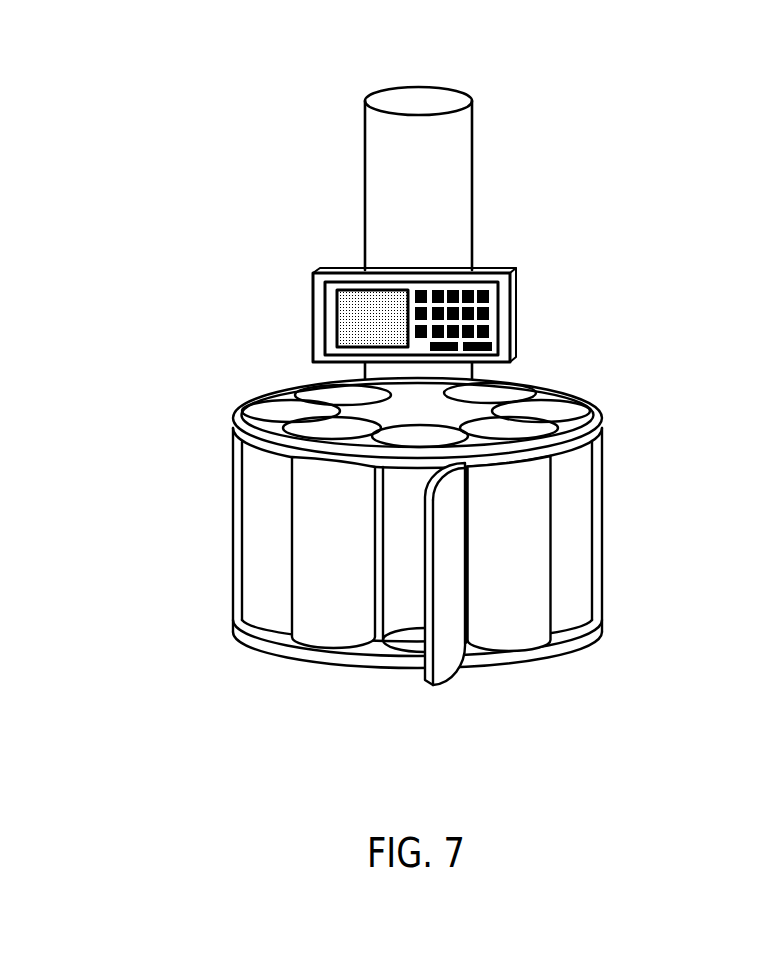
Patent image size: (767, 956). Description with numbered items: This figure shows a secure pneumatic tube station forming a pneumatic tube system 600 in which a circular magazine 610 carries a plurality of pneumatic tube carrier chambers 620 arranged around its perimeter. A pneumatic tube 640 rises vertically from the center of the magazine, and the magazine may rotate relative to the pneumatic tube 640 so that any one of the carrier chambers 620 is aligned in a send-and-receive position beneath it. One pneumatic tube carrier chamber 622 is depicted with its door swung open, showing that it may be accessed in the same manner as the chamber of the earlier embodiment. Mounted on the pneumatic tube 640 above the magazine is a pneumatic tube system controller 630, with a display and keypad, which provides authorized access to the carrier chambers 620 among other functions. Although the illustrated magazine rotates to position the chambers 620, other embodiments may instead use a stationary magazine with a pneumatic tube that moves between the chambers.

The pneumatic tube system 600 is at (140, 124).
The circular magazine 610 is at (233, 412).
The pneumatic tube carrier chambers 620 is at (312, 602).
The pneumatic tube carrier chamber 622 is at (447, 628).
The pneumatic tube system controller 630 is at (467, 318).
The pneumatic tube 640 is at (430, 202).